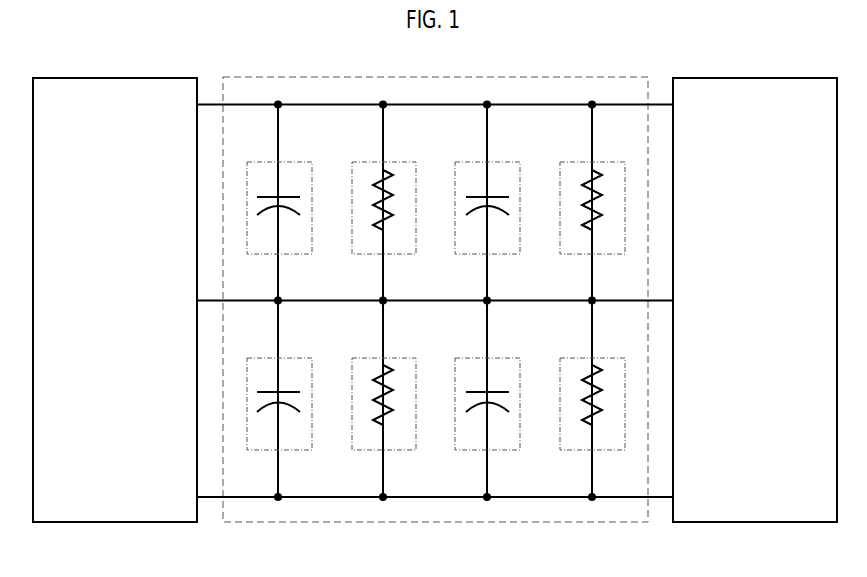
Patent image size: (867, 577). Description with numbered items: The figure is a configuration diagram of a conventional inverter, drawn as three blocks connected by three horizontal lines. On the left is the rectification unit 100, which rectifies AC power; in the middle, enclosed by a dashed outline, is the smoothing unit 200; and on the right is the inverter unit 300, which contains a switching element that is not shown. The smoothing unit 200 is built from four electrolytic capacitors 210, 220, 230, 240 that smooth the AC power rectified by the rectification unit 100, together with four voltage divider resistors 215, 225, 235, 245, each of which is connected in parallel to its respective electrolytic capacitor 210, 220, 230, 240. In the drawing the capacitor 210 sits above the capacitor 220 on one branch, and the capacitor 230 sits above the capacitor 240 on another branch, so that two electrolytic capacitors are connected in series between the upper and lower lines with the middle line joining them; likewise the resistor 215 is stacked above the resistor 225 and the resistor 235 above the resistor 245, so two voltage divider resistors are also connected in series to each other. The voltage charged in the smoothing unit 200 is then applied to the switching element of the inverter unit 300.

The rectification unit 100 is at (154, 77).
The smoothing unit 200 is at (575, 78).
The inverter unit 300 is at (735, 78).
The electrolytic capacitor 210 is at (302, 160).
The voltage divider resistor 215 is at (406, 160).
The electrolytic capacitor 220 is at (302, 357).
The voltage divider resistor 225 is at (406, 357).
The electrolytic capacitor 230 is at (509, 161).
The voltage divider resistor 235 is at (613, 161).
The electrolytic capacitor 240 is at (509, 357).
The voltage divider resistor 245 is at (613, 357).